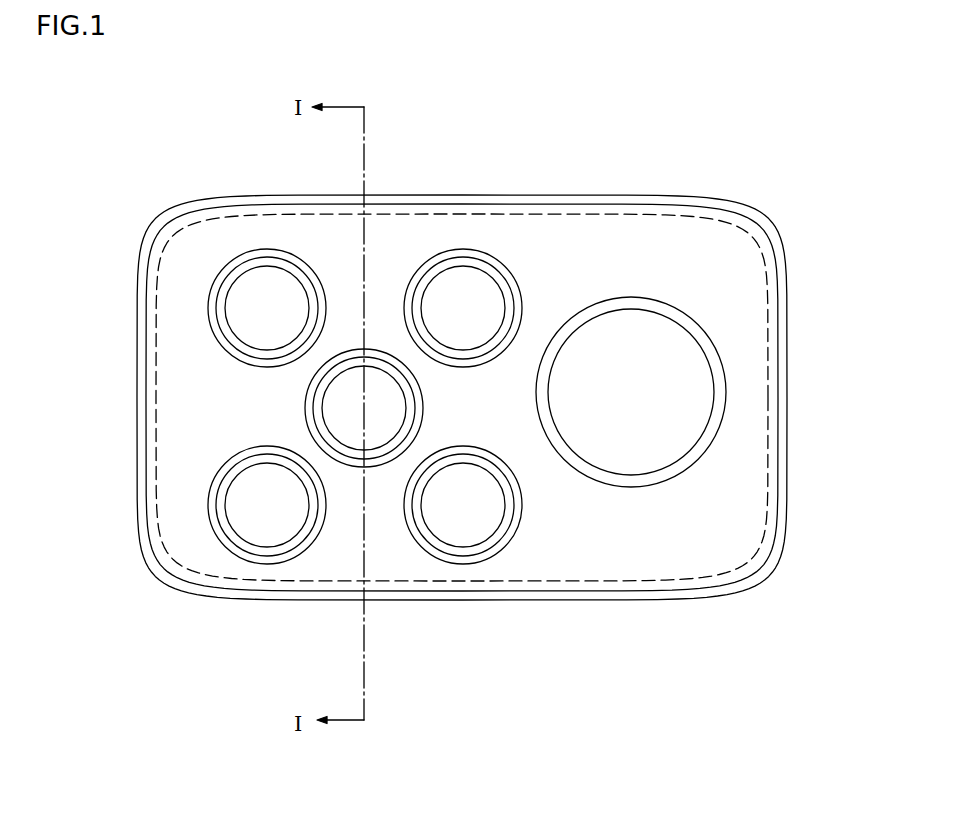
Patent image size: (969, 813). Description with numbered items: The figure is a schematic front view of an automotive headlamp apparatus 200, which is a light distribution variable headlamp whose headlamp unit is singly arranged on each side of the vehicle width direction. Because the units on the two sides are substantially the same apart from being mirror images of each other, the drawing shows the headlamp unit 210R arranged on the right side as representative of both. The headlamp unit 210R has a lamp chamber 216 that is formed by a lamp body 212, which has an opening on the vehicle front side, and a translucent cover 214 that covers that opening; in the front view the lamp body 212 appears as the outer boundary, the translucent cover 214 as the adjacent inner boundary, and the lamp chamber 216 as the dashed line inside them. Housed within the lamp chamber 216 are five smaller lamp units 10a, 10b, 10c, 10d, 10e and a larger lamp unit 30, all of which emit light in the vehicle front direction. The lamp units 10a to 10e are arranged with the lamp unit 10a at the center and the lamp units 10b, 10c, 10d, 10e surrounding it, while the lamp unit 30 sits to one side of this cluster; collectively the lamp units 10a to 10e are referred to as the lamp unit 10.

The lamp unit 10 is at (296, 392).
The lamp unit 10a is at (305, 410).
The lamp unit 10b is at (312, 263).
The lamp unit 10c is at (508, 264).
The lamp unit 10d is at (500, 556).
The lamp unit 10e is at (234, 562).
The lamp unit 30 is at (697, 318).
The automotive headlamp apparatus 200 is at (483, 783).
The headlamp unit 210R is at (662, 180).
The lamp body 212 is at (183, 592).
The translucent cover 214 is at (777, 466).
The lamp chamber 216 is at (538, 548).